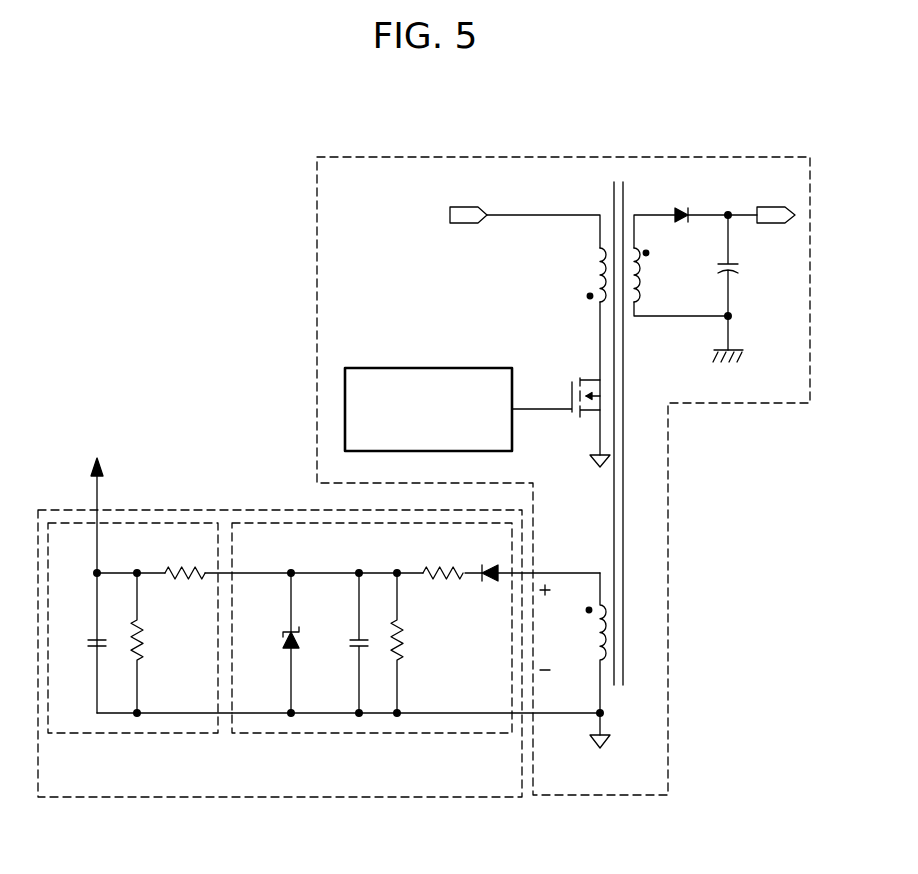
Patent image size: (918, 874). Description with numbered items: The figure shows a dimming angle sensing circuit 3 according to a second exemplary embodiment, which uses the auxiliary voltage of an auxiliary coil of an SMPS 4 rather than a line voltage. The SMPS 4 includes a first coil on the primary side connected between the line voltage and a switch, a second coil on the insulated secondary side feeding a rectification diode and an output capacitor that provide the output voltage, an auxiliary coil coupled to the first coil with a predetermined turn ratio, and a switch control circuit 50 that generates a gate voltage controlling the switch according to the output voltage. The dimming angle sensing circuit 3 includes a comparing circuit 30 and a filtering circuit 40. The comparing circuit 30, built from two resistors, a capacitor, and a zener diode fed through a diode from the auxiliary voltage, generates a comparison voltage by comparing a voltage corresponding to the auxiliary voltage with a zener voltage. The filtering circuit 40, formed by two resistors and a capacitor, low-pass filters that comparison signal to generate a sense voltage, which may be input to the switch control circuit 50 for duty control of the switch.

The dimming angle sensing circuit 3 is at (230, 797).
The SMPS 4 is at (317, 229).
The comparing circuit 30 is at (322, 733).
The filtering circuit 40 is at (155, 733).
The switch control circuit 50 is at (400, 368).